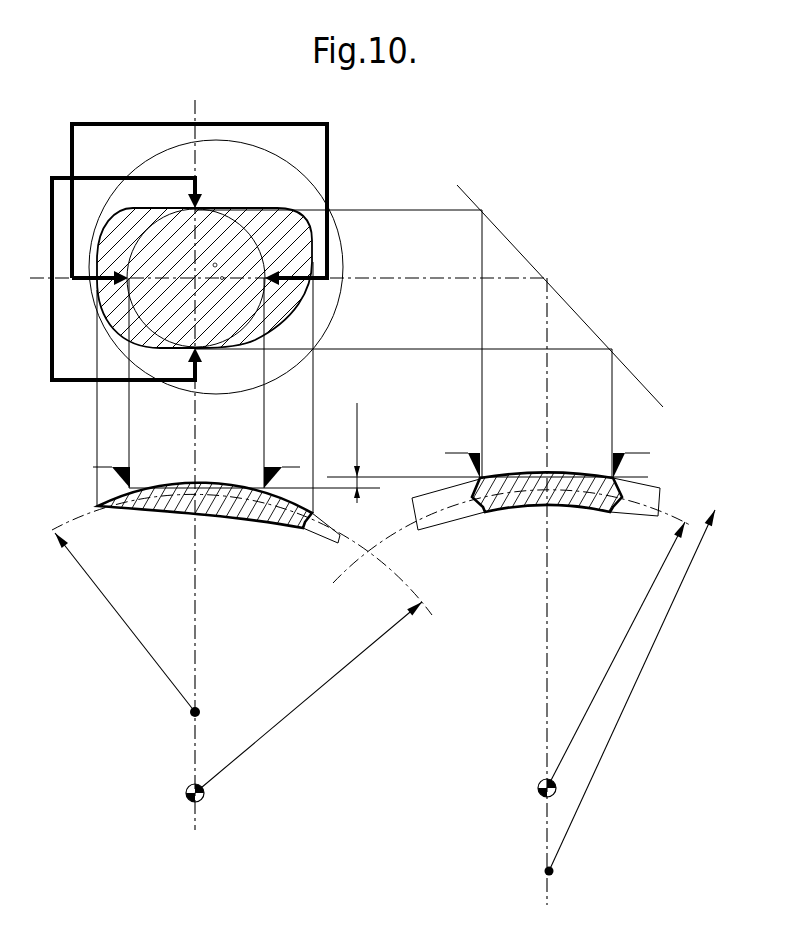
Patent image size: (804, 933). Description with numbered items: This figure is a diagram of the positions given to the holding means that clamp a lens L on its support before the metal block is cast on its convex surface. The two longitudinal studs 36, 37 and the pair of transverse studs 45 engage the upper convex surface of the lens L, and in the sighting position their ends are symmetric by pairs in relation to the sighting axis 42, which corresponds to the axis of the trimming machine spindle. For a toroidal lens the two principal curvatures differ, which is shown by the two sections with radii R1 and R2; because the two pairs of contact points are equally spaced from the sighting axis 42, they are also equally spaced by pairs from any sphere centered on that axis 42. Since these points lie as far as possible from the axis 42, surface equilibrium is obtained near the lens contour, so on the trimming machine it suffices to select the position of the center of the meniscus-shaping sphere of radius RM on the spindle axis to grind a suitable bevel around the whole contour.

The longitudinal stud 36 is at (198, 207).
The longitudinal stud 37 is at (198, 350).
The transverse stud 45 is at (127, 284).
The sighting axis 42 is at (195, 623).
The lens L is at (113, 360).
The first radius of toroidal lens R1 is at (122, 620).
The radius of meniscus-shaping sphere RM is at (298, 706).
The second radius of toroidal lens R2 is at (631, 694).